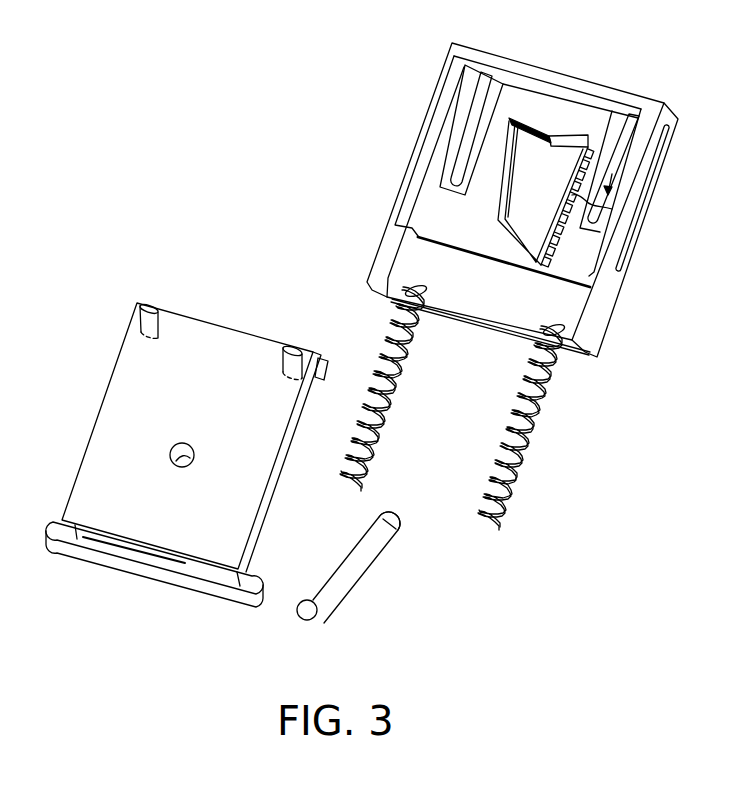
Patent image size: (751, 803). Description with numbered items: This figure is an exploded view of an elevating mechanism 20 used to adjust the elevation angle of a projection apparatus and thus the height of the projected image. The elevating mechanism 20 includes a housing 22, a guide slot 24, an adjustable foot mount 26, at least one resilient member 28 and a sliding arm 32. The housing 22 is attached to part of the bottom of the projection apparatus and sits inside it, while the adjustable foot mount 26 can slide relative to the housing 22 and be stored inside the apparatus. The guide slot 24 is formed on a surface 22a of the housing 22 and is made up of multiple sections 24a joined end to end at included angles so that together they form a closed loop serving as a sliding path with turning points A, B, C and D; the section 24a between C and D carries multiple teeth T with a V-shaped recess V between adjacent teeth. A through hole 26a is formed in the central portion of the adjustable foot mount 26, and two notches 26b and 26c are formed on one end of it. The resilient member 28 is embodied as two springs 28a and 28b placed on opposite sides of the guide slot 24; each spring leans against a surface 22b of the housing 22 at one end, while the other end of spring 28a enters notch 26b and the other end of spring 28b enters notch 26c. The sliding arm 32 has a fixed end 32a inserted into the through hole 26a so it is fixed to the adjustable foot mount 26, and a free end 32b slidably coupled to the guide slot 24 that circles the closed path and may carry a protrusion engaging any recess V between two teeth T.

The elevating mechanism 20 is at (103, 108).
The housing 22 is at (411, 153).
The surface of the housing 22a is at (452, 216).
The surface of the housing 22b is at (468, 66).
The guide slot 24 is at (544, 121).
The sections 24a is at (543, 129).
The adjustable foot mount 26 is at (109, 388).
The through hole 26a is at (184, 468).
The notch 26b is at (141, 315).
The notch 26c is at (289, 379).
The resilient member 28 is at (491, 405).
The spring 28a is at (388, 345).
The spring 28b is at (545, 390).
The sliding arm 32 is at (364, 580).
The fixed end 32a is at (307, 624).
The free end 32b is at (398, 527).